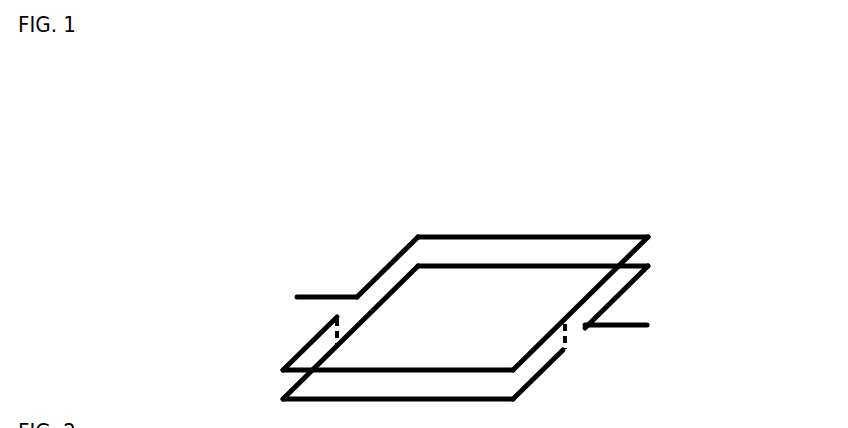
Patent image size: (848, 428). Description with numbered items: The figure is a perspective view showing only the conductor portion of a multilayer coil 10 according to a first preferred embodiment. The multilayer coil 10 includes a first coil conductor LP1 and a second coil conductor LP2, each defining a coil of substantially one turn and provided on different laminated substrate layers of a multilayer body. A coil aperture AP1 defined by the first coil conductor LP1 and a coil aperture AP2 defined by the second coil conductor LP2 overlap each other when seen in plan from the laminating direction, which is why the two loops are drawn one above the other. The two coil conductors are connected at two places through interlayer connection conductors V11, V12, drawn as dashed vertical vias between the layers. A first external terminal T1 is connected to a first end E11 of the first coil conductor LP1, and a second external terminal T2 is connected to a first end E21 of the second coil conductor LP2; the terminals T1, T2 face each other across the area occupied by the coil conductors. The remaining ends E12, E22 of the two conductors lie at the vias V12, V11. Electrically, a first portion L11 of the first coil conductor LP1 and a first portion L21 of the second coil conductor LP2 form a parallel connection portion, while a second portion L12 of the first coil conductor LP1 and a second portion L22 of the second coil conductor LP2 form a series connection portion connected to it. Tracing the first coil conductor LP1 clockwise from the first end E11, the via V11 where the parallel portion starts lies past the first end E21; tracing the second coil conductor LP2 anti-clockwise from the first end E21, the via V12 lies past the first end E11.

The multilayer coil 10 is at (622, 131).
The coil aperture AP1 is at (522, 307).
The coil aperture AP2 is at (458, 296).
The first coil conductor LP1 is at (661, 230).
The second coil conductor LP2 is at (661, 262).
The first portion of the first coil conductor L11 is at (398, 359).
The second portion of the first coil conductor L12 is at (533, 224).
The first portion of the second coil conductor L21 is at (398, 413).
The second portion of the second coil conductor L22 is at (533, 278).
The first end of the first coil conductor E11 is at (357, 296).
The second end of the first coil conductor E12 is at (337, 314).
The first end of the second coil conductor E21 is at (585, 316).
The second end of the second coil conductor E22 is at (566, 352).
The first external terminal T1 is at (311, 296).
The second external terminal T2 is at (631, 325).
The interlayer connection conductor V11 is at (567, 333).
The interlayer connection conductor V12 is at (335, 338).